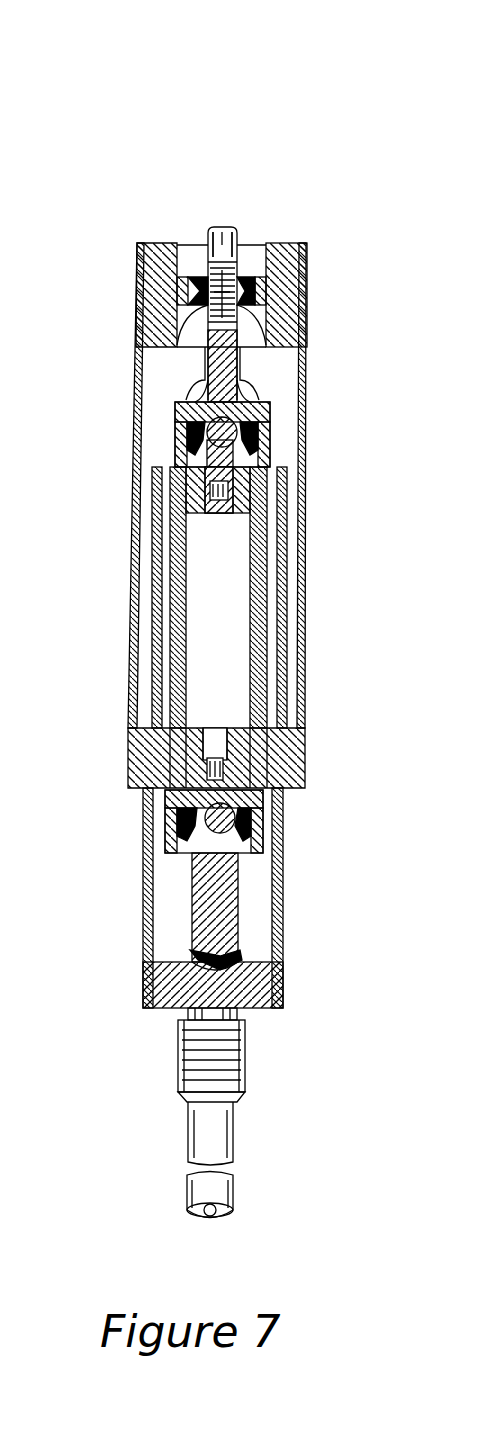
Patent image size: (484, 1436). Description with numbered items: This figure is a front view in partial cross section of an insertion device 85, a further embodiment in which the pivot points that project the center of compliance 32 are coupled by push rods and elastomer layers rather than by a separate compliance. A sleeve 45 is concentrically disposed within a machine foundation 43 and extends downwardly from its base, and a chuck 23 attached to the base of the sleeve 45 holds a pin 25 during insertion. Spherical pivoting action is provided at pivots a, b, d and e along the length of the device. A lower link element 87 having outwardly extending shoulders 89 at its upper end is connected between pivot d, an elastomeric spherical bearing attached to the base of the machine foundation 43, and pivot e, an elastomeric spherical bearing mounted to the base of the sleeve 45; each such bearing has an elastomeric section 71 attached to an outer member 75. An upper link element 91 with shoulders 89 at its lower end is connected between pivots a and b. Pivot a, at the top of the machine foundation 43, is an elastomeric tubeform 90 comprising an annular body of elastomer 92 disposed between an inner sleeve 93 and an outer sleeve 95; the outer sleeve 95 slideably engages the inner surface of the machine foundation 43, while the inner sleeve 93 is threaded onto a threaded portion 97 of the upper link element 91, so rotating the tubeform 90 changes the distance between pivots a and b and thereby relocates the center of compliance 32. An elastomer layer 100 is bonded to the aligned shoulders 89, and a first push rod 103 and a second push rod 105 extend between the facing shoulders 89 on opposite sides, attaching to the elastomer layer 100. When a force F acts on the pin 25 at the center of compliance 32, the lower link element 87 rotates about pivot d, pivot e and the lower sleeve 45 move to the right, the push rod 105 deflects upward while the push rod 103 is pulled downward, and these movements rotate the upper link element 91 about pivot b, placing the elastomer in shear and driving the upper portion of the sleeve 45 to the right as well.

The insertion device 85 is at (277, 129).
The elastomeric tubeform 90 is at (203, 242).
The threaded portion 97 is at (237, 268).
The pivot a is at (220, 290).
The outer sleeve 95 is at (263, 293).
The inner sleeve 93 is at (207, 307).
The annular body of elastomer 92 is at (255, 310).
The shoulders 89 is at (198, 403).
The upper link element 91 is at (262, 380).
The elastomer layer 100 is at (175, 425).
The pivot b is at (190, 437).
The outer member 75 is at (152, 492).
The elastomeric section 71 is at (285, 490).
The first push rod 103 is at (175, 575).
The second push rod 105 is at (260, 608).
The sleeve 45 is at (153, 648).
The machine foundation 43 is at (300, 673).
The pivot d is at (195, 815).
The pivot e is at (190, 960).
The lower link element 87 is at (240, 925).
The chuck 23 is at (245, 1045).
The pin 25 is at (233, 1147).
The center of compliance 32 is at (208, 1218).
The force F is at (165, 1210).